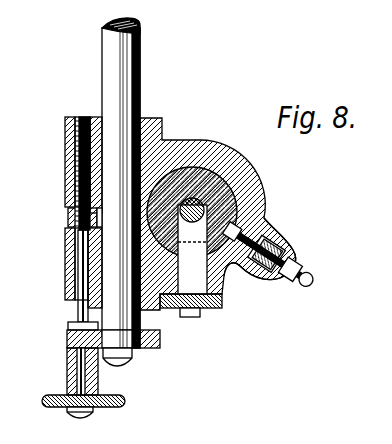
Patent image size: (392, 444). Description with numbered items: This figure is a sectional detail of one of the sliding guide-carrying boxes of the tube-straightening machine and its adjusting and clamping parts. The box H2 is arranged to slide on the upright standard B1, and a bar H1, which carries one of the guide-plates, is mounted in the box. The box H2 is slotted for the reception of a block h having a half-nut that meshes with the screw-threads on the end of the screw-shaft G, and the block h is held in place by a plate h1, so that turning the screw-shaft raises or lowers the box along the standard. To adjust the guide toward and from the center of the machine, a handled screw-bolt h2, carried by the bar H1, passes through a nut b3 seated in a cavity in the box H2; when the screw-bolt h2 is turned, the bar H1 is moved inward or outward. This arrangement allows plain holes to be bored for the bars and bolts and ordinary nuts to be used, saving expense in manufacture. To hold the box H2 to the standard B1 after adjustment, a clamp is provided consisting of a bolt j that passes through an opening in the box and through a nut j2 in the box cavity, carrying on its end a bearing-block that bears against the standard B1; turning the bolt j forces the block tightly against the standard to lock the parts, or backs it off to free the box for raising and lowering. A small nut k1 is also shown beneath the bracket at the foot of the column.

The bar H1 is at (108, 87).
The box H2 is at (65, 171).
The nut b3 is at (68, 219).
The standard B1 is at (233, 158).
The screw-shaft G is at (204, 203).
The block h is at (192, 249).
The nut j2 is at (236, 268).
The bolt j is at (284, 280).
The plate h1 is at (222, 305).
The handled screw-bolt h2 is at (66, 378).
The nut k1 is at (124, 362).